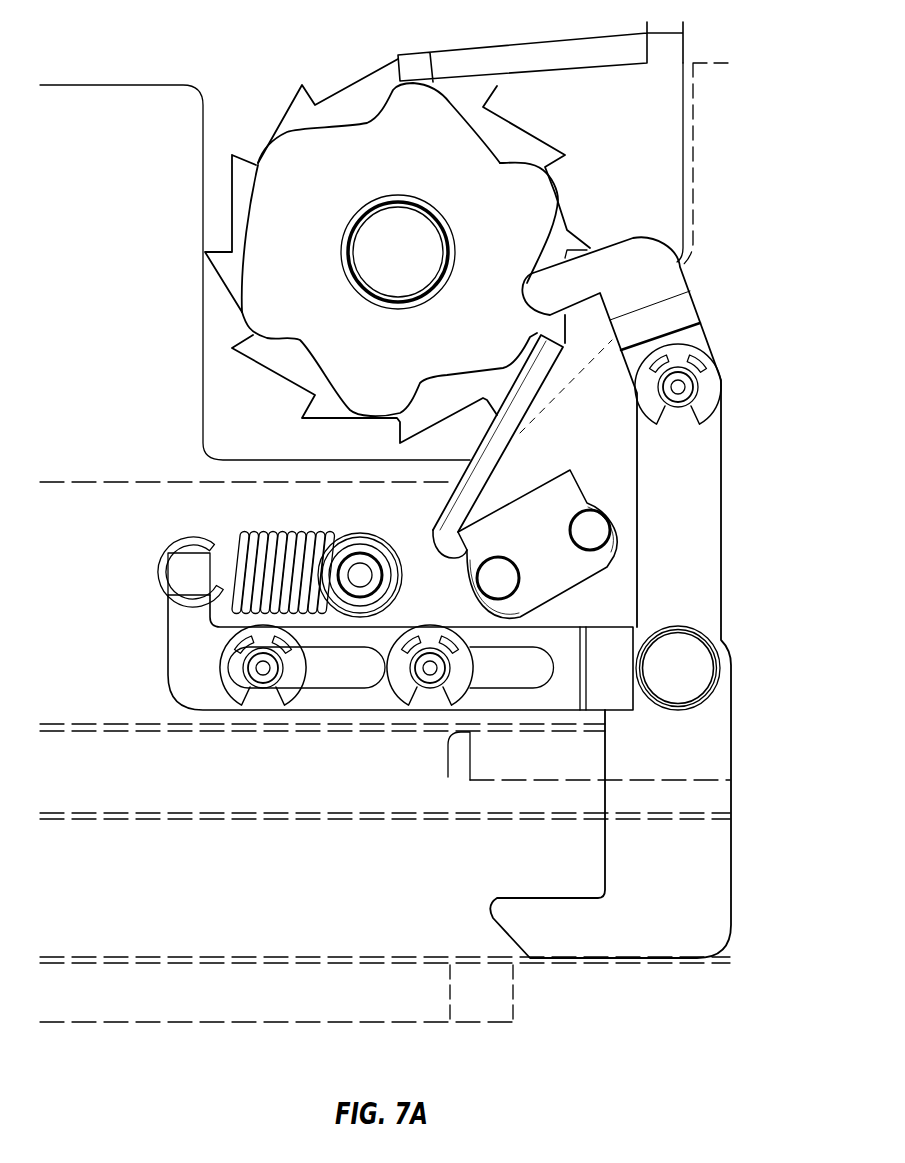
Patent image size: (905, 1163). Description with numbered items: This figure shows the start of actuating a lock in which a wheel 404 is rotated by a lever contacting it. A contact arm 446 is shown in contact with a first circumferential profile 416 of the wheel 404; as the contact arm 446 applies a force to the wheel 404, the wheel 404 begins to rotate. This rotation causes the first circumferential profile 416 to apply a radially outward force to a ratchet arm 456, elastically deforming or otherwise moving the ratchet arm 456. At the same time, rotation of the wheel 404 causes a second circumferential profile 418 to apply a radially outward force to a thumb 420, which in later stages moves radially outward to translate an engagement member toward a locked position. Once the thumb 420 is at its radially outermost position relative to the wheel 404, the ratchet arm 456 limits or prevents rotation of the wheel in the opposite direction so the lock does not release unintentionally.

The first circumferential profile 416 is at (356, 72).
The contact arm 446 is at (487, 43).
The second circumferential profile 418 is at (560, 197).
The wheel 404 is at (567, 230).
The thumb 420 is at (663, 282).
The ratchet arm 456 is at (527, 396).